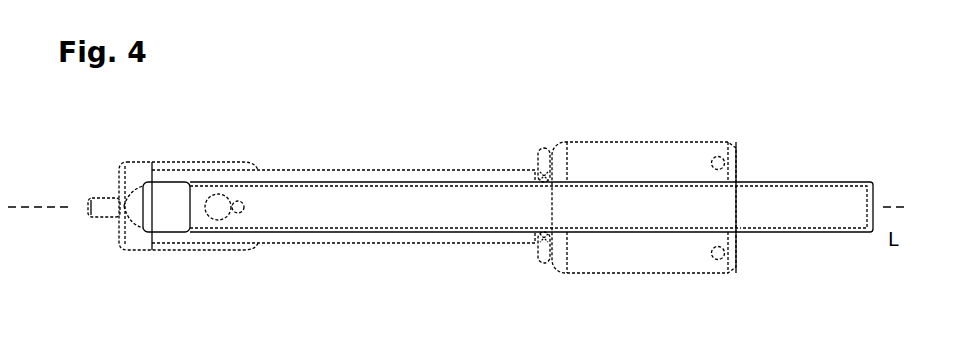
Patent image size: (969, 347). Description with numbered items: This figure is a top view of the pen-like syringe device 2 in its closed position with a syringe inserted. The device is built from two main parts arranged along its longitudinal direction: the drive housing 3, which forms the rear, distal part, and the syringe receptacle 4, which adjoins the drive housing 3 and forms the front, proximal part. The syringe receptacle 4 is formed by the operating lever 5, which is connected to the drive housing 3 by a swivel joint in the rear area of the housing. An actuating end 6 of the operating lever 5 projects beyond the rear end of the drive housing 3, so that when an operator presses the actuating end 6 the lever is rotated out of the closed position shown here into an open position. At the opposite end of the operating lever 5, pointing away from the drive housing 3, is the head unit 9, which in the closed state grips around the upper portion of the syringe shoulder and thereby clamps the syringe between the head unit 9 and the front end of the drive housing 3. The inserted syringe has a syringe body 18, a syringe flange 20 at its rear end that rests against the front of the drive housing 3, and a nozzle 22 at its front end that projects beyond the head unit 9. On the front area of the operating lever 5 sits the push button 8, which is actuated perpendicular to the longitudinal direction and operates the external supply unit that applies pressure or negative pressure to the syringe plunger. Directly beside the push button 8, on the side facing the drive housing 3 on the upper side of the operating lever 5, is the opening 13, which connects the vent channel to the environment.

The pen-like syringe device 2 is at (753, 66).
The drive housing 3 is at (653, 253).
The syringe receptacle 4 is at (369, 123).
The operating lever 5 is at (393, 203).
The actuating end 6 is at (820, 203).
The push button 8 is at (218, 202).
The head unit 9 is at (167, 245).
The opening 13 is at (247, 205).
The syringe body 18 is at (383, 238).
The syringe flange 20 is at (542, 263).
The nozzle 22 is at (100, 210).